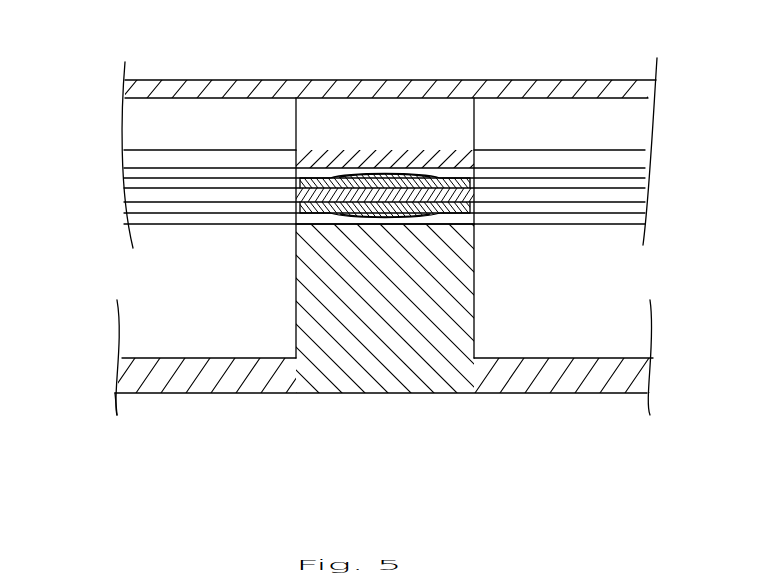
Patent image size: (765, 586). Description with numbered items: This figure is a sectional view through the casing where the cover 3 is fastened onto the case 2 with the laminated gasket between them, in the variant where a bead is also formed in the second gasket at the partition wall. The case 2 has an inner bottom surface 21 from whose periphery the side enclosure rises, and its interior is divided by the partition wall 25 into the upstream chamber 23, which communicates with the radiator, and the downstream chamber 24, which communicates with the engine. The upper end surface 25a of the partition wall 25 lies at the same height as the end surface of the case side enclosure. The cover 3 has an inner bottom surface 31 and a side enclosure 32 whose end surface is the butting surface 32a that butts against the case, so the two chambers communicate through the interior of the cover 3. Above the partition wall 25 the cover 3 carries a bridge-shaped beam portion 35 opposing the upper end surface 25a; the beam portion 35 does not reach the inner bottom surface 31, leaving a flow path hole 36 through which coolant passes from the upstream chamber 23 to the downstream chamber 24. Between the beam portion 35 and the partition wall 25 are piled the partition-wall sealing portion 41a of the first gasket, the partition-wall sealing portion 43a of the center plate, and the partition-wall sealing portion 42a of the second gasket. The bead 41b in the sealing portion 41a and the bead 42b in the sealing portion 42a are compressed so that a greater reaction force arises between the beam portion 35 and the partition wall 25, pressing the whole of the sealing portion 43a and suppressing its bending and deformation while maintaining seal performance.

The case 2 is at (246, 414).
The cover 3 is at (277, 62).
The inner bottom surface 21 is at (605, 358).
The upstream chamber 23 is at (160, 338).
The downstream chamber 24 is at (571, 330).
The partition wall 25 is at (298, 328).
The upper end surface 25a is at (470, 223).
The inner bottom surface 31 is at (604, 92).
The side enclosure 32 is at (133, 128).
The butting surface 32a is at (138, 170).
The beam portion 35 is at (458, 160).
The flow path hole 36 is at (422, 122).
The partition-wall sealing portion 41a is at (297, 205).
The bead 41b is at (337, 223).
The partition-wall sealing portion 42a is at (302, 182).
The bead 42b is at (360, 171).
The partition-wall sealing portion 43a is at (296, 192).